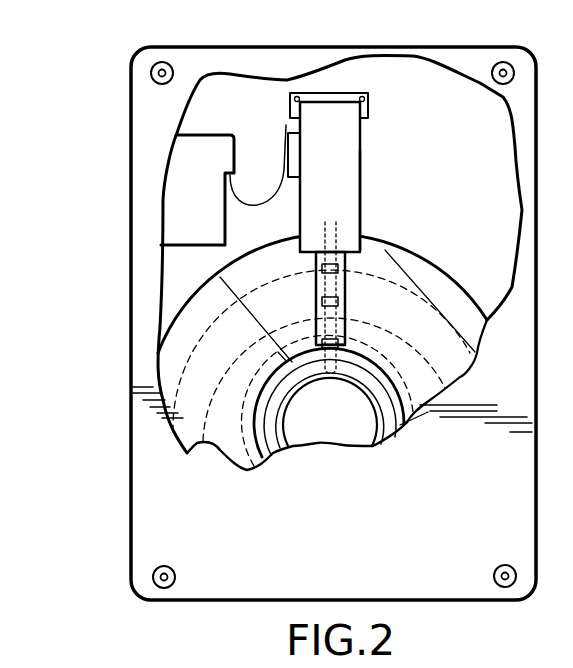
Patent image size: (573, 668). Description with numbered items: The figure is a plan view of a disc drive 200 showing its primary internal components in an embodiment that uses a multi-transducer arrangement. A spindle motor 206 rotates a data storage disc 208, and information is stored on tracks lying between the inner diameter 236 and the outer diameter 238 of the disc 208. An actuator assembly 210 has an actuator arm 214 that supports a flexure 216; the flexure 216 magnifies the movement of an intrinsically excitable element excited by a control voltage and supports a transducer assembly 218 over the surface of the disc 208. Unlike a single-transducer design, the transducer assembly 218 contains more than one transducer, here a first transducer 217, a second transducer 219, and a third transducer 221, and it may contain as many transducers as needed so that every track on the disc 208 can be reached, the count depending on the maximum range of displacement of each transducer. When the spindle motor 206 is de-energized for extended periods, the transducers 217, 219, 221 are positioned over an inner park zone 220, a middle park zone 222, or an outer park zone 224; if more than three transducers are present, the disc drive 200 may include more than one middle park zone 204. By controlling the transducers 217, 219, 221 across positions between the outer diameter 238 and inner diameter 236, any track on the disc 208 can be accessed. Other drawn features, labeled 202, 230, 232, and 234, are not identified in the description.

The disc drive 200 is at (90, 46).
The housing body 202 is at (181, 286).
The middle park zone 204 is at (167, 490).
The spindle motor 206 is at (331, 425).
The disc 208 is at (465, 398).
The actuator assembly 210 is at (374, 127).
The actuator arm 214 is at (360, 195).
The flexure 216 is at (347, 262).
The first transducer 217 is at (320, 264).
The transducer assembly 218 is at (303, 250).
The second transducer 219 is at (322, 301).
The inner park zone 220 is at (250, 417).
The third transducer 221 is at (322, 344).
The middle park zone 222 is at (227, 367).
The outer park zone 224 is at (194, 352).
The arm 230 is at (268, 196).
The bracket 232 is at (290, 128).
The block 234 is at (193, 199).
The inner diameter 236 is at (403, 424).
The outer diameter 238 is at (462, 290).